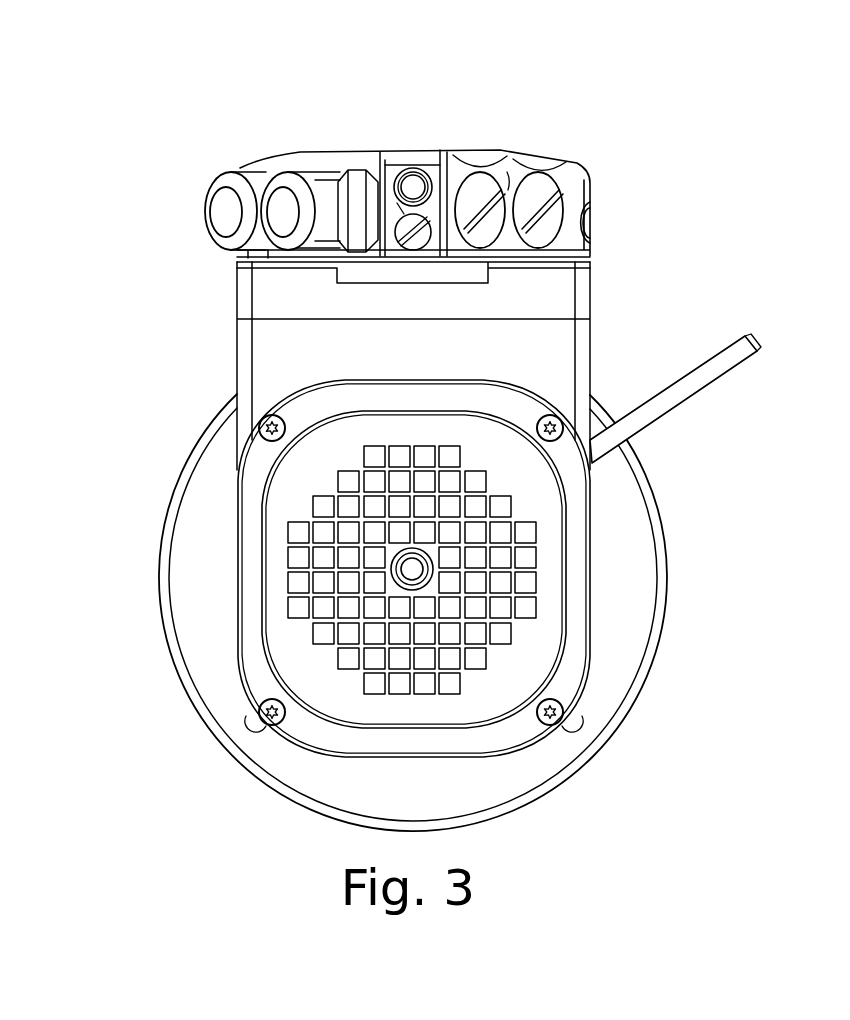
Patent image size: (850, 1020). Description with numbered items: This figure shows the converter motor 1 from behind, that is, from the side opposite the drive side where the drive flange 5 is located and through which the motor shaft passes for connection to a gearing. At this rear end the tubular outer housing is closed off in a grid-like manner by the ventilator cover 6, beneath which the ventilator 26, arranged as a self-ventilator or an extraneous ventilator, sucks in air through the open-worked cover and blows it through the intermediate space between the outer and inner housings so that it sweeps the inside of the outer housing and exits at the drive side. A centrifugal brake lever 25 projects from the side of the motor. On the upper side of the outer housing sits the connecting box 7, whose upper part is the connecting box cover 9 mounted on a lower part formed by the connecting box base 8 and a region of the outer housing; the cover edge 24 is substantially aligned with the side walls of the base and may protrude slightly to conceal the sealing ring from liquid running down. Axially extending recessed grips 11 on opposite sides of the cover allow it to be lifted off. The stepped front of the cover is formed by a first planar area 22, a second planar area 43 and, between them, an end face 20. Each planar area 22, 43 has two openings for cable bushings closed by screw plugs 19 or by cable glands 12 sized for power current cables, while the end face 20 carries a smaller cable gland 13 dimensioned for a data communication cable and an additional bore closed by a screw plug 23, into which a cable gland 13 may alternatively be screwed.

The converter motor 1 is at (443, 434).
The drive flange 5 is at (597, 708).
The ventilator cover 6 is at (582, 548).
The connecting box 7 is at (384, 364).
The connecting box base 8 is at (540, 362).
The connecting box cover 9 is at (438, 150).
The recessed grip 11 is at (600, 210).
The cable gland 12 is at (225, 212).
The cable gland 13 is at (414, 185).
The screw plug 19 is at (477, 196).
The end face 20 is at (433, 213).
The planar area 22 is at (508, 178).
The screw plug 23 is at (381, 156).
The cover edge 24 is at (552, 293).
The centrifugal brake lever 25 is at (705, 378).
The ventilator 26 is at (473, 610).
The planar area 43 is at (357, 163).